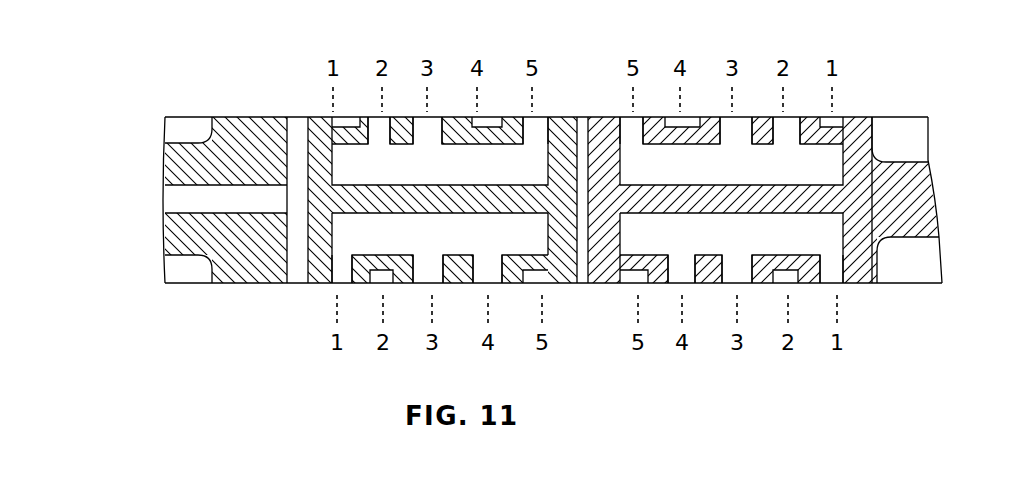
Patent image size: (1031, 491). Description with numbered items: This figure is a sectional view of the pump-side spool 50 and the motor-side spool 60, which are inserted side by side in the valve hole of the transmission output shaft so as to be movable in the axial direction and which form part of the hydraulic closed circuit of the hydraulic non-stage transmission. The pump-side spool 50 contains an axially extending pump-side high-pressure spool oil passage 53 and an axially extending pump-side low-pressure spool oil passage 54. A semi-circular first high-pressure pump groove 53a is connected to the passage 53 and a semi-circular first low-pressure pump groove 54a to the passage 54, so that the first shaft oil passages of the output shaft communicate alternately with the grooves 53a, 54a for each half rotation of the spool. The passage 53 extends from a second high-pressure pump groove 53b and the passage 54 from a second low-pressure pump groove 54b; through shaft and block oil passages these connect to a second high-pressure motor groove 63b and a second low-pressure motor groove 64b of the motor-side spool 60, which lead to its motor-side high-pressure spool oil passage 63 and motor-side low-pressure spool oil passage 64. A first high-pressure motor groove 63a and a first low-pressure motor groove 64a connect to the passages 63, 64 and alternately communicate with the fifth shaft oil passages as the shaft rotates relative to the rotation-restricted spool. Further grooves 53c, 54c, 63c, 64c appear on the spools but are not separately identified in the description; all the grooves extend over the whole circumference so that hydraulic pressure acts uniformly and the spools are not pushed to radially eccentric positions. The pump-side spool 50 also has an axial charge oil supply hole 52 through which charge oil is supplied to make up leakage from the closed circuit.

The pump-side spool 50 is at (156, 239).
The charge oil supply hole 52 is at (178, 190).
The pump-side high-pressure spool oil passage 53 is at (449, 175).
The first high-pressure pump groove 53a is at (438, 117).
The second high-pressure pump groove 53b is at (540, 117).
The opening at position 2 53c is at (388, 117).
The pump-side low-pressure spool oil passage 54 is at (449, 247).
The first low-pressure pump groove 54a is at (433, 283).
The second low-pressure pump groove 54b is at (497, 283).
The opening at position 1 54c is at (345, 277).
The motor-side spool 60 is at (936, 175).
The motor-side high-pressure spool oil passage 63 is at (752, 175).
The first high-pressure motor groove 63a is at (752, 117).
The second high-pressure motor groove 63b is at (640, 117).
The opening at position 2 63c is at (797, 117).
The motor-side low-pressure spool oil passage 64 is at (752, 247).
The first low-pressure motor groove 64a is at (742, 283).
The second low-pressure motor groove 64b is at (690, 283).
The opening at position 1 64c is at (837, 283).